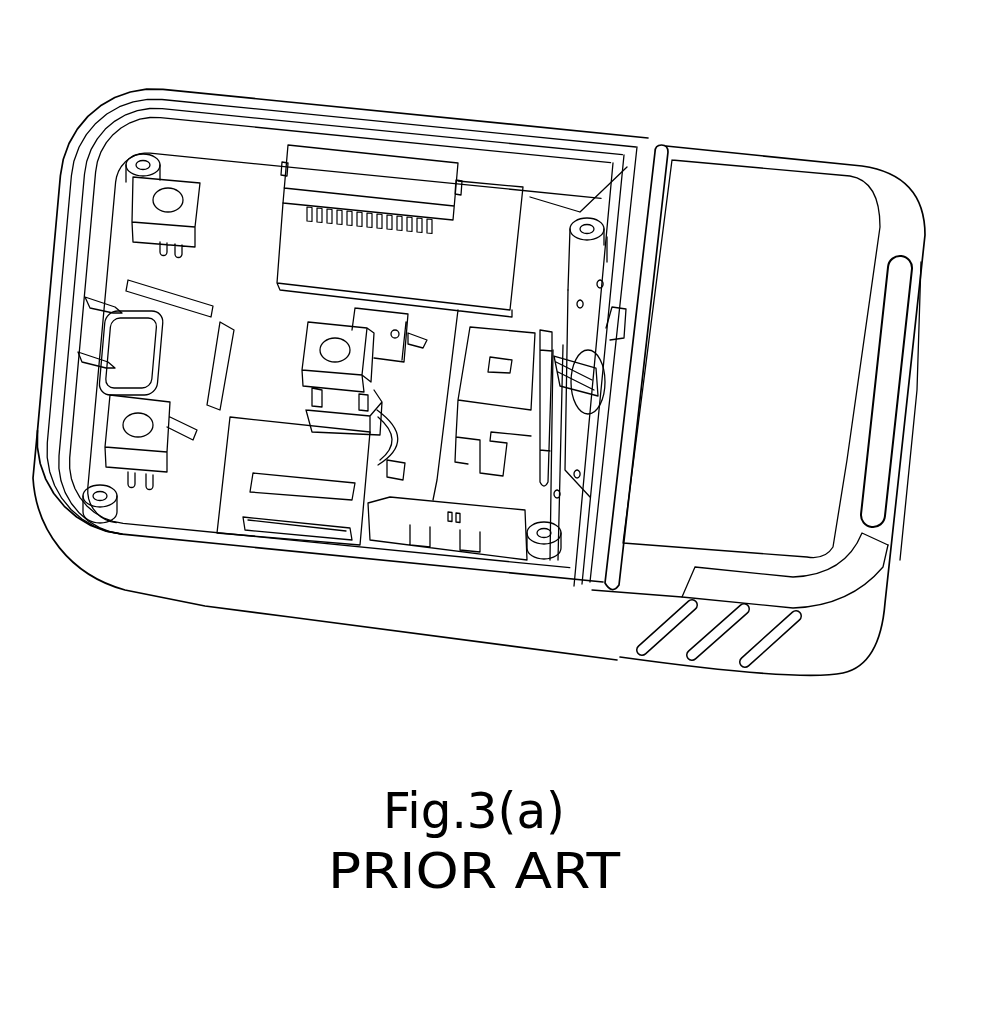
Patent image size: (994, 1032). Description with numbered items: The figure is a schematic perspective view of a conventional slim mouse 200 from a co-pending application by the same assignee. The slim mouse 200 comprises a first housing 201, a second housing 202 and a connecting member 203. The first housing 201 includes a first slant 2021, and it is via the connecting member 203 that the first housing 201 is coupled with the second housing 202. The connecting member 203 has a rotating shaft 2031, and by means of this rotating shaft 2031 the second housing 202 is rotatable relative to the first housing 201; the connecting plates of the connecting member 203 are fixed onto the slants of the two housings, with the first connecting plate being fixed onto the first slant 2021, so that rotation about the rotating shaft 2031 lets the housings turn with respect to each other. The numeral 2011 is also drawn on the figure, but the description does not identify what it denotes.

The slim mouse 200 is at (648, 53).
The first housing 201 is at (150, 133).
The hinge portion of housing 2011 is at (617, 583).
The second housing 202 is at (778, 195).
The first slant 2021 is at (585, 602).
The connecting member 203 is at (558, 463).
The rotating shaft 2031 is at (625, 338).